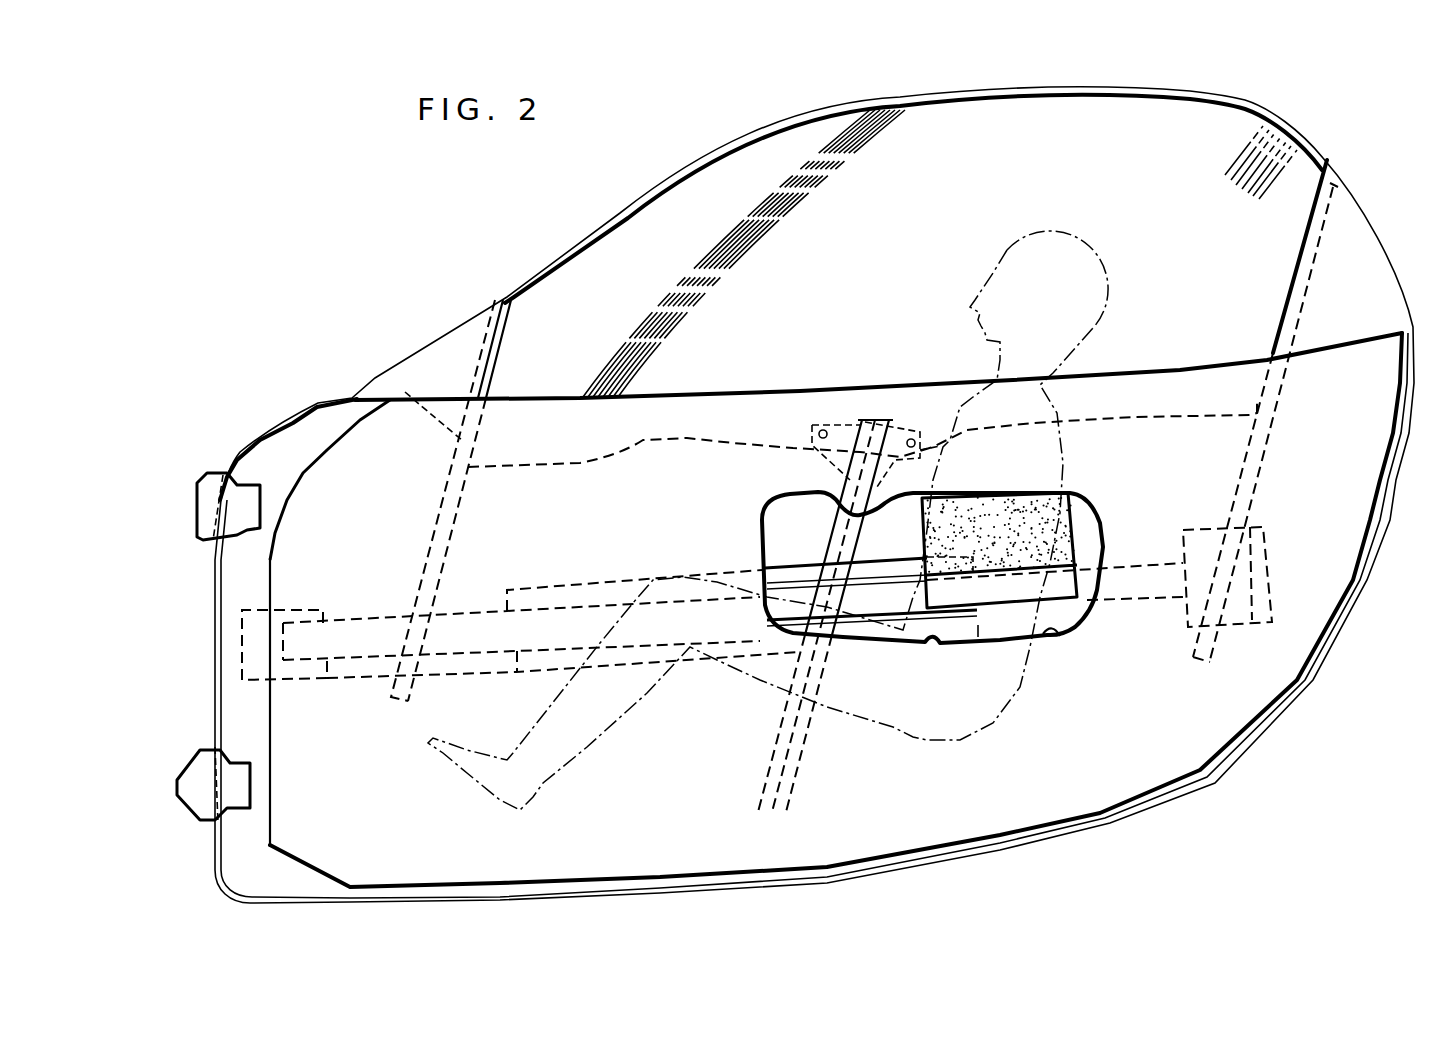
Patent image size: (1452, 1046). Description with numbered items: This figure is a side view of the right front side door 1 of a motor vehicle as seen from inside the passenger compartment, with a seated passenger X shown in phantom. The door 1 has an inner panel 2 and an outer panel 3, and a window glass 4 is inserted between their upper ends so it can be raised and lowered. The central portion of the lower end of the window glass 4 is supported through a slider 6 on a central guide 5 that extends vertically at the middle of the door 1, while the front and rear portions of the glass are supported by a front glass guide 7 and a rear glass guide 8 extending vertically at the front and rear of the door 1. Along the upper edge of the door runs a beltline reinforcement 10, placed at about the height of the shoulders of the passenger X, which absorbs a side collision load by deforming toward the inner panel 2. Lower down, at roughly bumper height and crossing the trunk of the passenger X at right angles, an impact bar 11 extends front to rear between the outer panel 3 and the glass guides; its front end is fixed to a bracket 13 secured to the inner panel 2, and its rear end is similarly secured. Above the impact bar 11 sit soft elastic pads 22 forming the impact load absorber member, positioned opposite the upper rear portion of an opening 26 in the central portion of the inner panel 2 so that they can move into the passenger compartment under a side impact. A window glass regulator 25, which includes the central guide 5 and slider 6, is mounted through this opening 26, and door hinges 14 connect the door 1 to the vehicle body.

The front side door 1 is at (430, 324).
The inner panel 2 is at (353, 447).
The outer panel 3 is at (300, 473).
The window glass 4 is at (1122, 123).
The central guide 5 is at (833, 553).
The slider 6 is at (847, 420).
The front glass guide 7 is at (402, 388).
The rear glass guide 8 is at (1250, 508).
The beltline reinforcement 10 is at (673, 440).
The impact bar 11 is at (540, 581).
The bracket 13 is at (297, 607).
The door hinges 14 is at (206, 477).
The pads 22 is at (1070, 520).
The window glass regulator 25 is at (810, 427).
The opening 26 is at (1050, 630).
The seated passenger X is at (1007, 247).